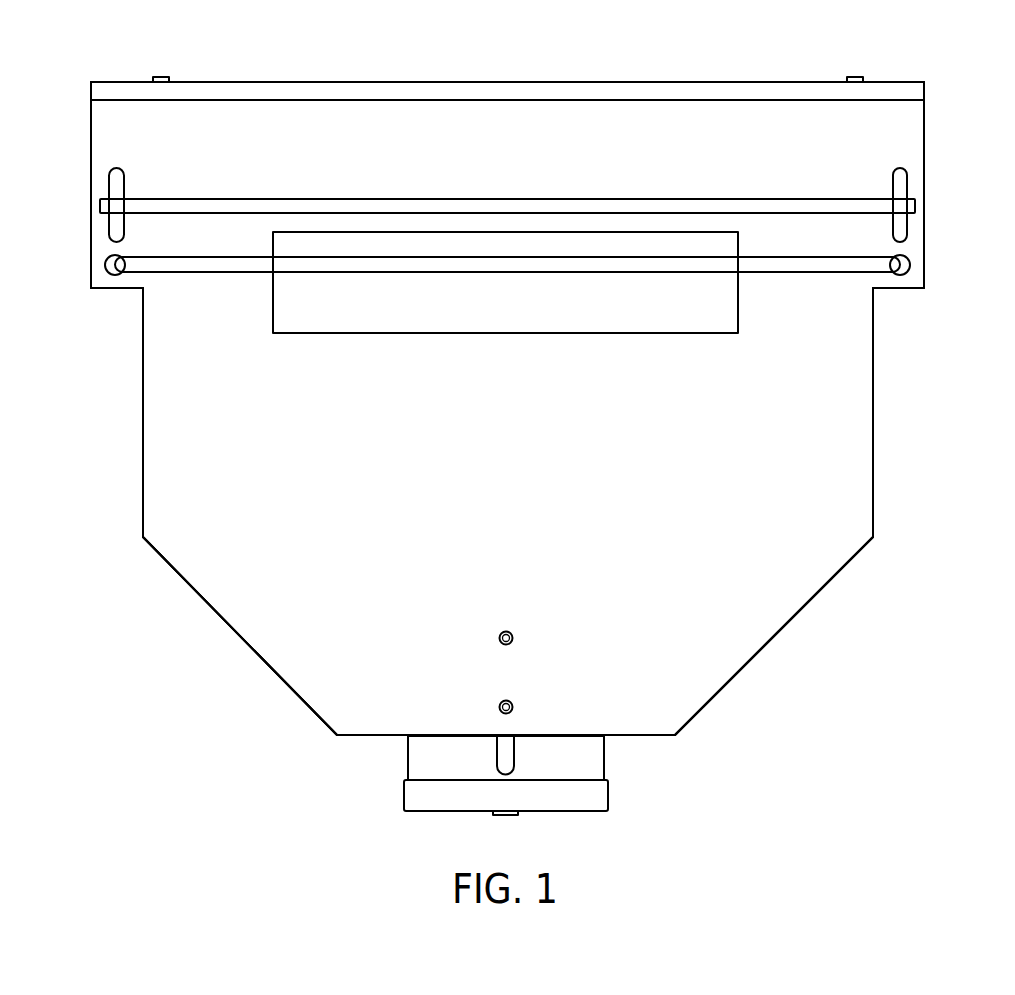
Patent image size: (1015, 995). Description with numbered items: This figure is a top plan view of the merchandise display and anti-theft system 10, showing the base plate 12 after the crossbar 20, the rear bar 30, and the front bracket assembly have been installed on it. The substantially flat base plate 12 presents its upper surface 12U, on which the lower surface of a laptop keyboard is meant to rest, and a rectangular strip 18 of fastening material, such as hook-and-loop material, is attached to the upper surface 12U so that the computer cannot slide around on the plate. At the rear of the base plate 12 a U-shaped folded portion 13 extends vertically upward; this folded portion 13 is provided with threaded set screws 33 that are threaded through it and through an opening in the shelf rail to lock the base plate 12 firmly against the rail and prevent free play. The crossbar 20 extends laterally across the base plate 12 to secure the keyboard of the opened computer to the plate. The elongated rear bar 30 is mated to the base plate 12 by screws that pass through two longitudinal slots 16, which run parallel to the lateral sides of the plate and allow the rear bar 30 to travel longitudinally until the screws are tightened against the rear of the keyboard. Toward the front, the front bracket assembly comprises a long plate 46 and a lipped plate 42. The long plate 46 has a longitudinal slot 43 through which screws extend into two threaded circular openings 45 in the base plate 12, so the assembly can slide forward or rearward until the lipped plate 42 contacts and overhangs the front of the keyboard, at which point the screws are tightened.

The system 10 is at (184, 700).
The base plate 12 is at (837, 458).
The upper surface 12U is at (522, 463).
The folded portion 13 is at (913, 89).
The longitudinal slots 16 is at (108, 180).
The rectangular strip of fastening material 18 is at (689, 333).
The crossbar 20 is at (853, 272).
The rear bar 30 is at (870, 198).
The threaded set screws 33 is at (857, 77).
The lipped plate 42 is at (404, 800).
The longitudinal slot 43 is at (514, 755).
The threaded circular openings 45 is at (497, 633).
The long plate 46 is at (408, 757).